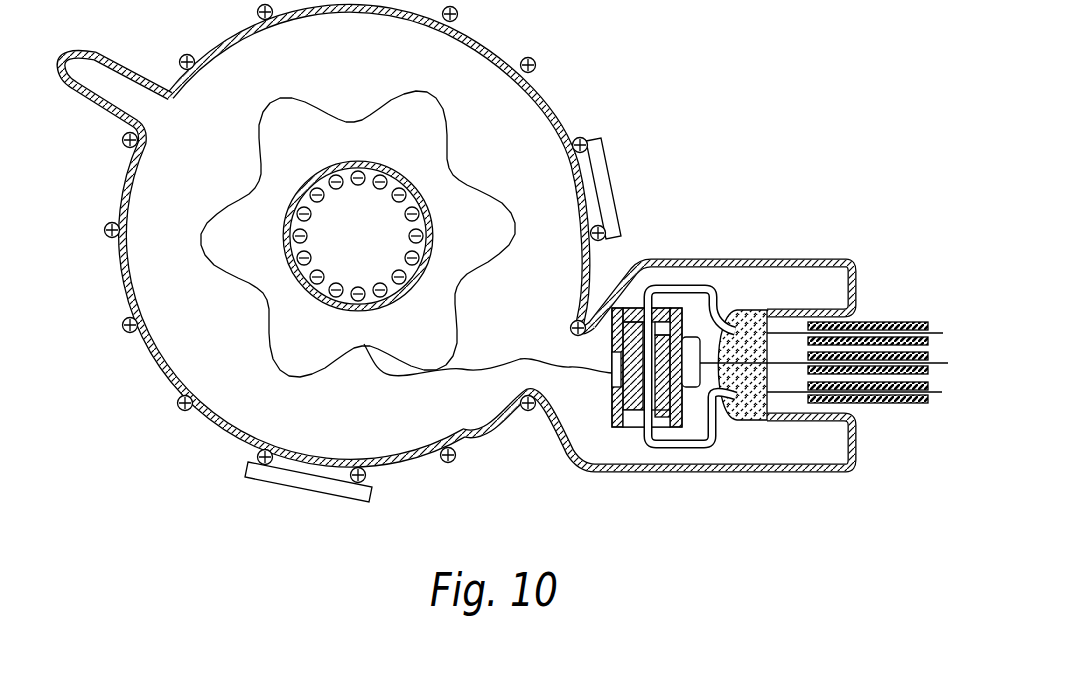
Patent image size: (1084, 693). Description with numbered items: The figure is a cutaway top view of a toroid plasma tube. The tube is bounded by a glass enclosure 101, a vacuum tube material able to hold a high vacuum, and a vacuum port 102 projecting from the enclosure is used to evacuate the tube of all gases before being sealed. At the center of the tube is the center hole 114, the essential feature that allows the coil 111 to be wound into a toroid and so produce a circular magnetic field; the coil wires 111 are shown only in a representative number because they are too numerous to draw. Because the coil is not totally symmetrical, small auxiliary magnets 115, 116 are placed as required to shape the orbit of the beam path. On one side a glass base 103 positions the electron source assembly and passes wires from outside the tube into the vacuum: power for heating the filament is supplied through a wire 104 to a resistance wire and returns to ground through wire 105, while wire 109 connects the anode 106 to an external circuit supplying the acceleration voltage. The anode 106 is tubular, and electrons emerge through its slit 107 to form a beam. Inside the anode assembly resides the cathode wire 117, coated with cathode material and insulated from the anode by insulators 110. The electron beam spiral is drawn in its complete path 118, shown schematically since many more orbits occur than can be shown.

The glass enclosure 101 is at (761, 259).
The vacuum port 102 is at (120, 62).
The glass base 103 is at (754, 310).
The wire 104 is at (686, 284).
The wire 105 is at (718, 441).
The anode 106 is at (610, 419).
The slit 107 is at (613, 362).
The wire 109 is at (949, 358).
The insulators 110 is at (637, 426).
The coil 111 is at (112, 238).
The center hole 114 is at (376, 243).
The auxiliary magnet 115 is at (278, 487).
The auxiliary magnet 116 is at (610, 177).
The cathode wire 117 is at (630, 320).
The complete path 118 is at (326, 374).